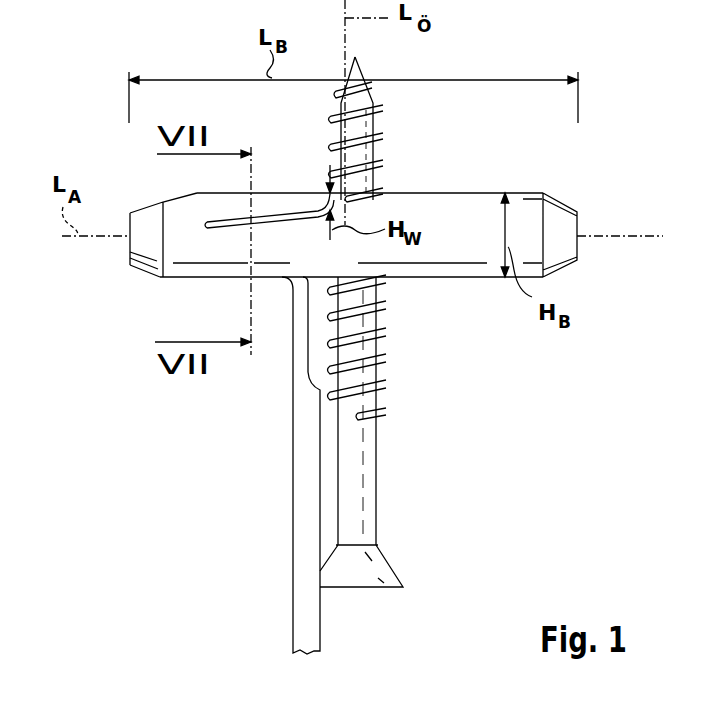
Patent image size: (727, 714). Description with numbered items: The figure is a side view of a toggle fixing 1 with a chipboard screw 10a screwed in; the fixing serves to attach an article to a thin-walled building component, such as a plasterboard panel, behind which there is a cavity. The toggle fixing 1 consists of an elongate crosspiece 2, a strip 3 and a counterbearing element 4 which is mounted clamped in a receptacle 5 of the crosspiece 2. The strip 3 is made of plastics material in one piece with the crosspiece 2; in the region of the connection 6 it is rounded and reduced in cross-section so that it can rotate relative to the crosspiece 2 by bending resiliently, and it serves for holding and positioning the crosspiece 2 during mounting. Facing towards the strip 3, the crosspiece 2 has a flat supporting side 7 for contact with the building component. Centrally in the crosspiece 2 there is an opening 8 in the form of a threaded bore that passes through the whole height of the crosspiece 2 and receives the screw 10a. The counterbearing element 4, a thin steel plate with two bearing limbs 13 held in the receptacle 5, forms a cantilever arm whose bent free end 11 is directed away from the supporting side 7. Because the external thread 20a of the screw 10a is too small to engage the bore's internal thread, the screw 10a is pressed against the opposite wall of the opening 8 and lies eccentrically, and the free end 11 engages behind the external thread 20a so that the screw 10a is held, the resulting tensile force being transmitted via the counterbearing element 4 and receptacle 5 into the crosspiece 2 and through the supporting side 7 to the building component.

The toggle fixing 1 is at (605, 145).
The crosspiece 2 is at (170, 225).
The strip 3 is at (307, 454).
The counterbearing element 4 is at (308, 210).
The receptacle 5 is at (235, 235).
The connection 6 is at (297, 282).
The supporting side 7 is at (186, 287).
The opening 8 is at (386, 186).
The free end 11 is at (383, 188).
The bearing limbs 13 is at (230, 222).
The external thread 20a is at (333, 160).
The screw 10a is at (367, 463).